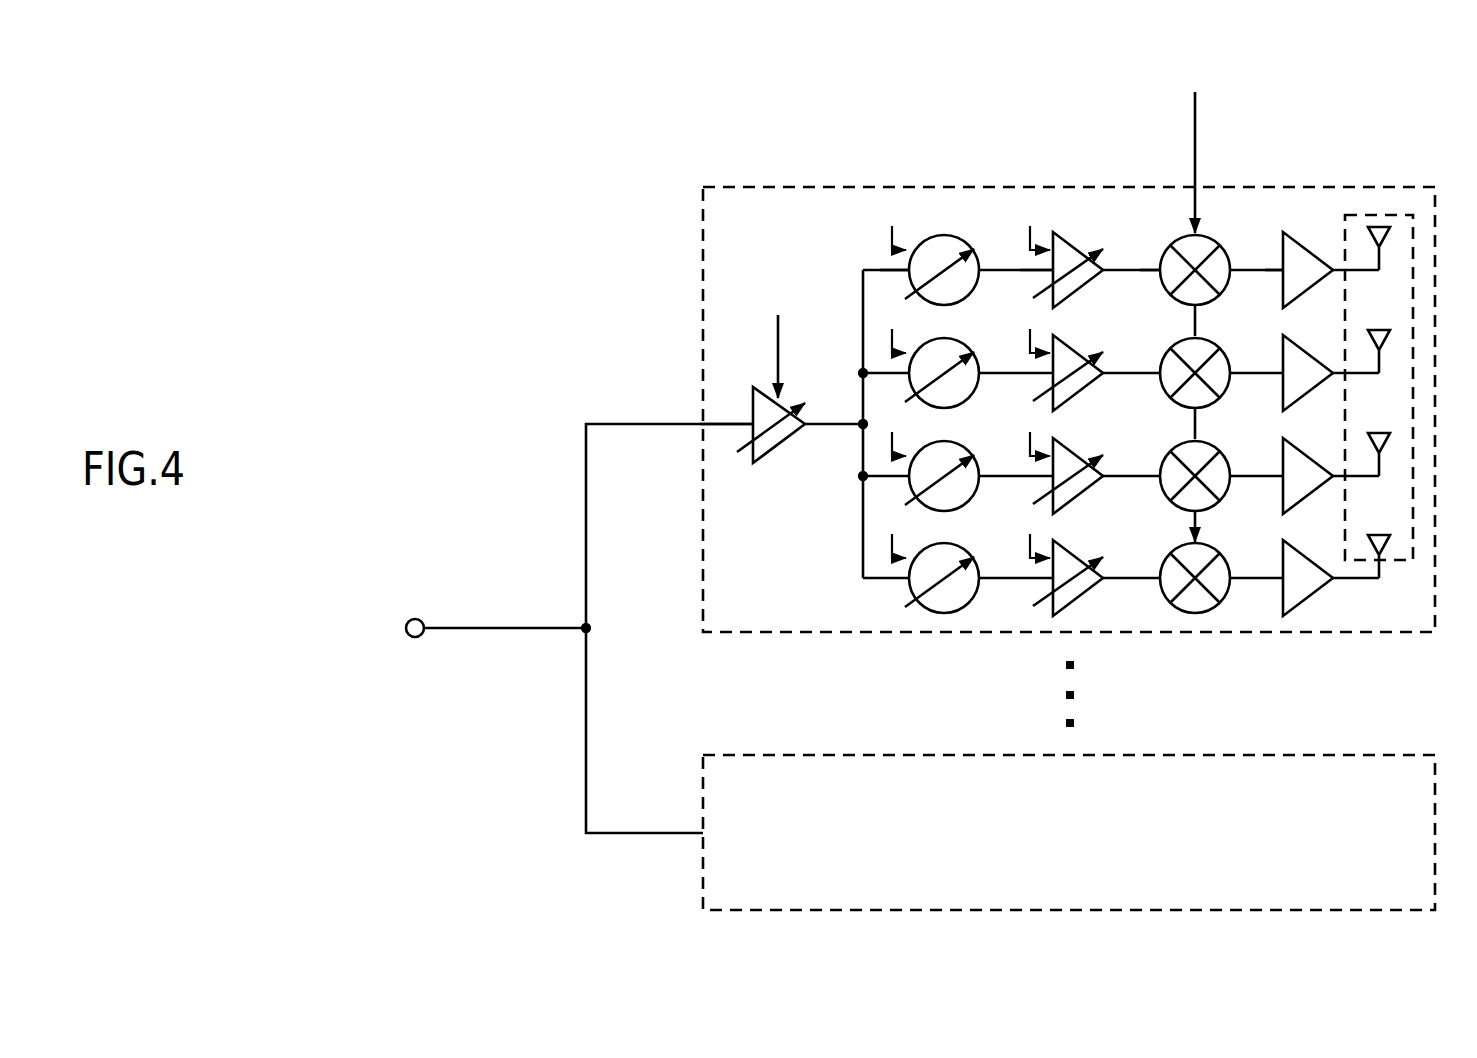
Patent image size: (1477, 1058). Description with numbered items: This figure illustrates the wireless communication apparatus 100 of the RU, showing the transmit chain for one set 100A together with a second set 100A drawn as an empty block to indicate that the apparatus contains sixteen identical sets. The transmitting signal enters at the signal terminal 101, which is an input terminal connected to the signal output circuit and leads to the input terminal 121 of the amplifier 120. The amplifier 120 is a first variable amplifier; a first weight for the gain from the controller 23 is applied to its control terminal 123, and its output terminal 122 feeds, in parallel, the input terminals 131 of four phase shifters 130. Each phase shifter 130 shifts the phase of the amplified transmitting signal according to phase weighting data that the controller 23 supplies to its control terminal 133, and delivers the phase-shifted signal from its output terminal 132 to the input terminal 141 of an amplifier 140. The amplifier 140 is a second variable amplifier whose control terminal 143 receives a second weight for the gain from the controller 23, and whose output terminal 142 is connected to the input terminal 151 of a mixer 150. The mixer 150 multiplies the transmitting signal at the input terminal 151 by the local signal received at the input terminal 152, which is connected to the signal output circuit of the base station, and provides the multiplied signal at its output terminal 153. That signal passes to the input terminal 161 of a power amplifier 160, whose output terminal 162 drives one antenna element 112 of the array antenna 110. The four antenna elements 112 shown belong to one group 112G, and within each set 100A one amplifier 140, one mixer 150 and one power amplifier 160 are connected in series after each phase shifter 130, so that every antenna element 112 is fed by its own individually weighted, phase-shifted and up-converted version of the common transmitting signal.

The wireless communication apparatus 100 is at (1408, 63).
The set 100A is at (762, 186).
The signal terminal 101 is at (414, 618).
The amplifier 120 is at (747, 432).
The input terminal 121 is at (750, 423).
The output terminal 122 is at (806, 432).
The control terminal 123 is at (768, 392).
The controller 23 is at (906, 378).
The phase shifter 130 is at (948, 234).
The input terminal 131 is at (906, 266).
The output terminal 132 is at (983, 264).
The control terminal 133 is at (912, 250).
The amplifier 140 is at (1073, 245).
The input terminal 141 is at (1046, 266).
The output terminal 142 is at (1110, 266).
The control terminal 143 is at (1053, 248).
The mixer 150 is at (1206, 237).
The input terminal 151 is at (1158, 266).
The input terminal 152 is at (1186, 240).
The output terminal 153 is at (1245, 266).
The power amplifier 160 is at (1295, 243).
The input terminal 161 is at (1272, 266).
The output terminal 162 is at (1338, 266).
The antenna element 112 is at (1380, 225).
The array antenna 110 is at (1380, 188).
The group 112G is at (1410, 214).